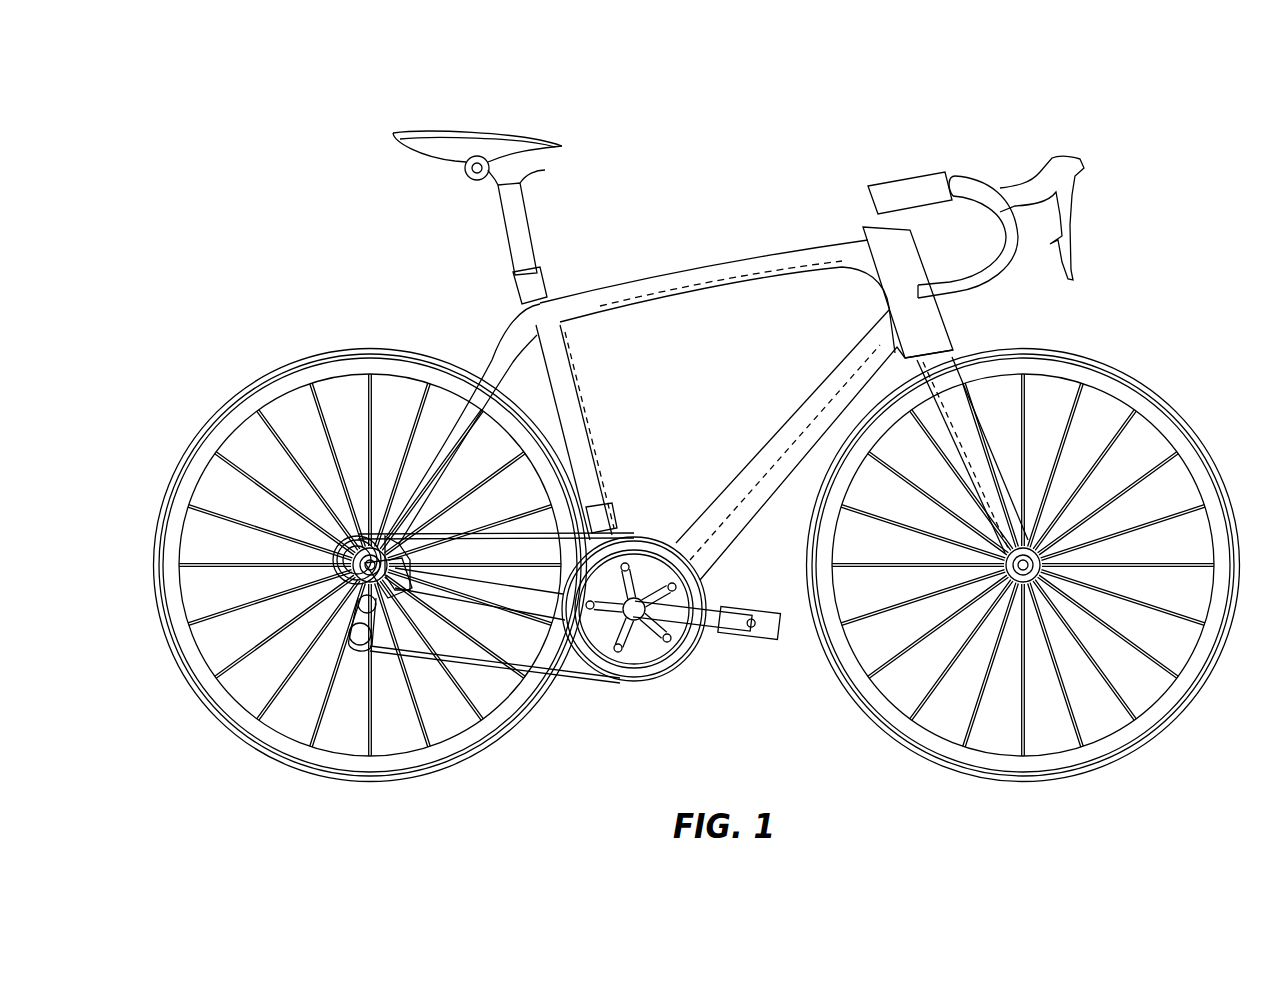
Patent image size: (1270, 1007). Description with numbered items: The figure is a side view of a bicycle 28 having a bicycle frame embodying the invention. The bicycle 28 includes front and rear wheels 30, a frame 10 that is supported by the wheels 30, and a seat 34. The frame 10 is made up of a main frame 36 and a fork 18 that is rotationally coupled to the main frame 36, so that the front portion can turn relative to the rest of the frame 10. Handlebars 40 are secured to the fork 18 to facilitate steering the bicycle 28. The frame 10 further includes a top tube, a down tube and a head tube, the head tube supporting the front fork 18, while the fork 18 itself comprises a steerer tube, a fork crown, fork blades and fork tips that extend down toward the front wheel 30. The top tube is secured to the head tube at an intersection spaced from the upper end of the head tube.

The frame 10 is at (656, 246).
The fork 18 is at (977, 353).
The bicycle 28 is at (786, 110).
The wheels 30 is at (280, 382).
The seat 34 is at (447, 132).
The main frame 36 is at (725, 290).
The handlebars 40 is at (982, 187).